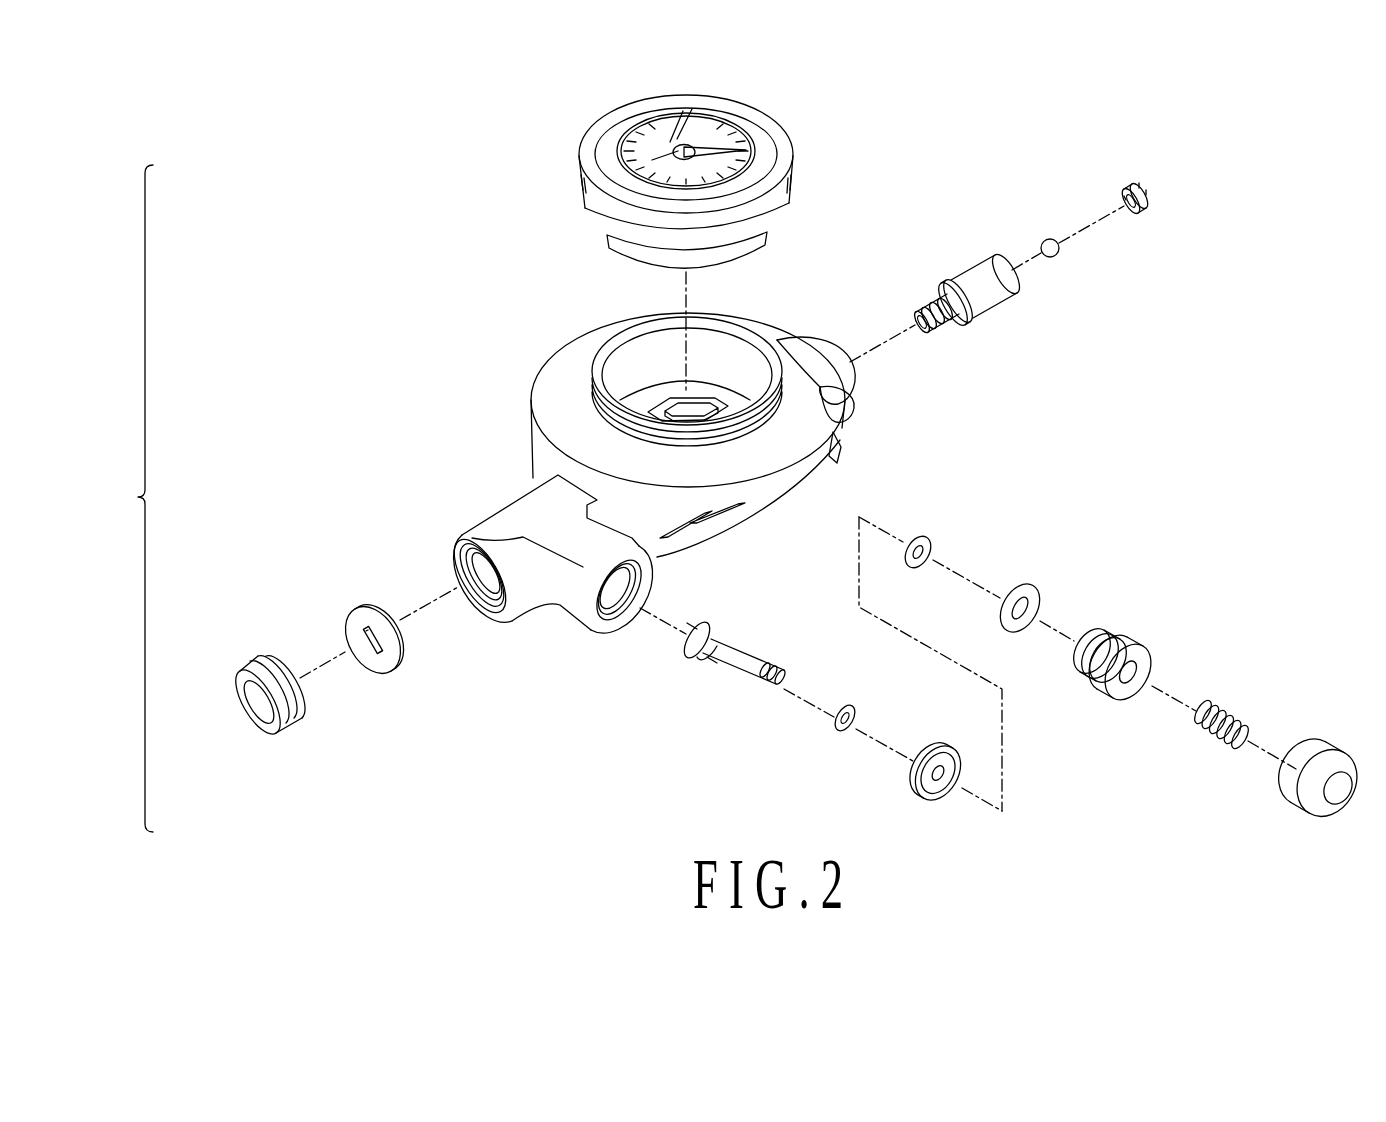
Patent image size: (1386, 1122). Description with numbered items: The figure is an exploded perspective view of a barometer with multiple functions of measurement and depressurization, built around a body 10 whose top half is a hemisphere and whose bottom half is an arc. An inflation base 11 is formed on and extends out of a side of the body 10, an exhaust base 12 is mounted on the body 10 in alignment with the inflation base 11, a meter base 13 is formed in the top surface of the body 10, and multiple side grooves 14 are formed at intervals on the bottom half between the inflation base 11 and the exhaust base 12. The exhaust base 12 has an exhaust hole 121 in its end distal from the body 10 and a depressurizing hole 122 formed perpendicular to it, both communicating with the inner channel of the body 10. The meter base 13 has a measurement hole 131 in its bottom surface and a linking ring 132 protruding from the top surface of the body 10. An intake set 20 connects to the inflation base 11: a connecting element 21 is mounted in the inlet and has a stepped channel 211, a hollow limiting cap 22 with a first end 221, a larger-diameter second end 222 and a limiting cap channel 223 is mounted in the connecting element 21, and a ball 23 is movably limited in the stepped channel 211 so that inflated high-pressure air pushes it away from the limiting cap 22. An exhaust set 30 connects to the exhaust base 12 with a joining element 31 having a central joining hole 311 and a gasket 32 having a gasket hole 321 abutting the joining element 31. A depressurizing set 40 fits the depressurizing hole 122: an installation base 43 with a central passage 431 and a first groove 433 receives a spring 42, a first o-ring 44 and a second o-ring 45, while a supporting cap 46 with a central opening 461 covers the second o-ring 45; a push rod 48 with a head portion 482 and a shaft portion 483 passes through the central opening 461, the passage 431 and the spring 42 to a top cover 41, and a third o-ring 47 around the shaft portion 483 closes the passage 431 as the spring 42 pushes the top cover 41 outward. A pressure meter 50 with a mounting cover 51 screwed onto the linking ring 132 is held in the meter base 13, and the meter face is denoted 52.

The body 10 is at (633, 443).
The inflation base 11 is at (818, 350).
The exhaust base 12 is at (547, 545).
The exhaust hole 121 is at (467, 564).
The depressurizing hole 122 is at (627, 578).
The meter base 13 is at (722, 349).
The measurement hole 131 is at (697, 415).
The linking ring 132 is at (770, 355).
The side grooves 14 is at (810, 468).
The intake set 20 is at (1048, 267).
The connecting element 21 is at (990, 317).
The stepped channel 211 is at (920, 325).
The limiting cap 22 is at (1134, 208).
The first end 221 is at (1140, 212).
The second end 222 is at (1142, 192).
The limiting cap channel 223 is at (1125, 195).
The ball 23 is at (1058, 256).
The exhaust set 30 is at (331, 681).
The joining element 31 is at (263, 708).
The joining hole 311 is at (265, 714).
The gasket 32 is at (355, 646).
The gasket hole 321 is at (365, 640).
The depressurizing set 40 is at (1004, 666).
The top cover 41 is at (1300, 790).
The spring 42 is at (1235, 725).
The installation base 43 is at (1154, 640).
The passage 431 is at (1130, 672).
The first groove 433 is at (1100, 640).
The first o-ring 44 is at (1035, 595).
The second o-ring 45 is at (930, 540).
The supporting cap 46 is at (937, 792).
The central opening 461 is at (938, 788).
The third o-ring 47 is at (835, 728).
The push rod 48 is at (752, 650).
The head portion 482 is at (703, 625).
The shaft portion 483 is at (737, 652).
The pressure meter 50 is at (670, 174).
The mounting cover 51 is at (785, 160).
The gauge dial 52 is at (723, 135).